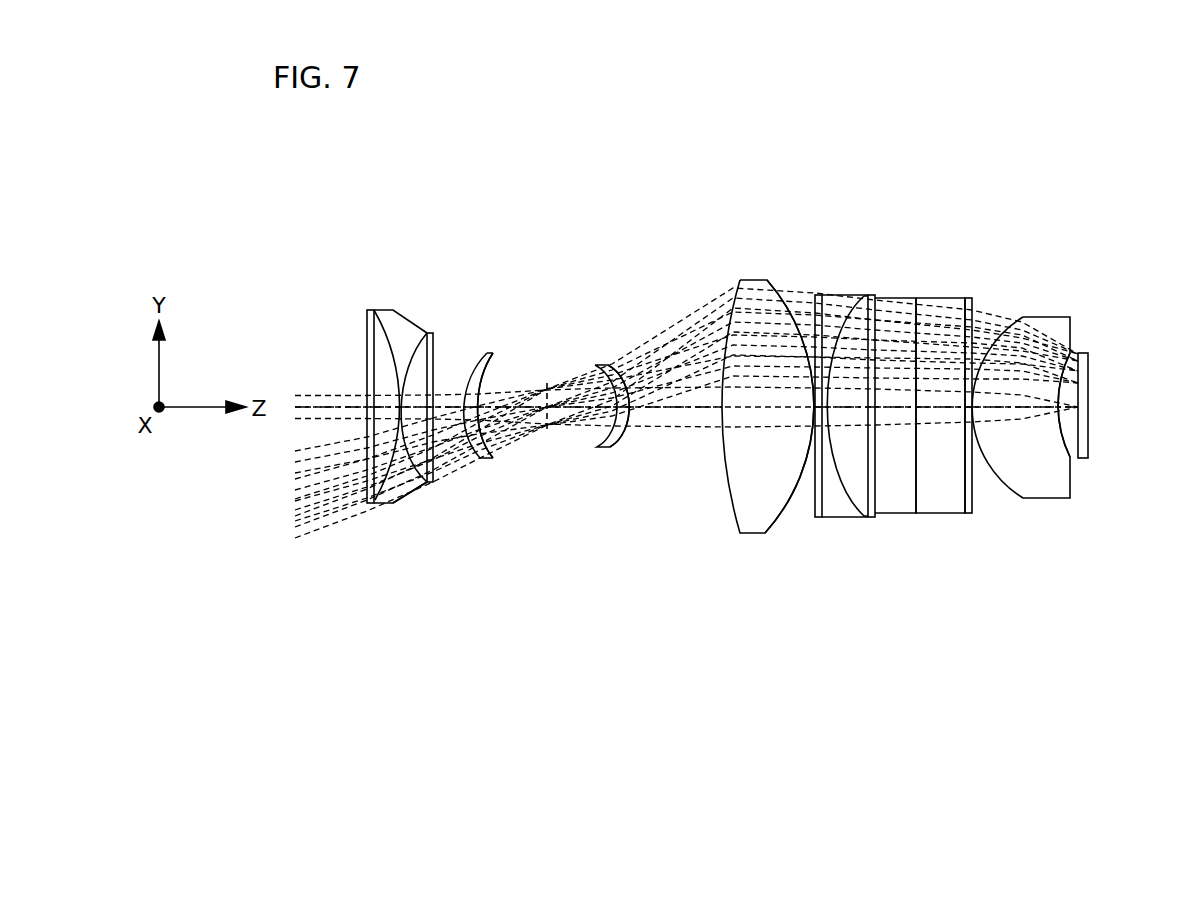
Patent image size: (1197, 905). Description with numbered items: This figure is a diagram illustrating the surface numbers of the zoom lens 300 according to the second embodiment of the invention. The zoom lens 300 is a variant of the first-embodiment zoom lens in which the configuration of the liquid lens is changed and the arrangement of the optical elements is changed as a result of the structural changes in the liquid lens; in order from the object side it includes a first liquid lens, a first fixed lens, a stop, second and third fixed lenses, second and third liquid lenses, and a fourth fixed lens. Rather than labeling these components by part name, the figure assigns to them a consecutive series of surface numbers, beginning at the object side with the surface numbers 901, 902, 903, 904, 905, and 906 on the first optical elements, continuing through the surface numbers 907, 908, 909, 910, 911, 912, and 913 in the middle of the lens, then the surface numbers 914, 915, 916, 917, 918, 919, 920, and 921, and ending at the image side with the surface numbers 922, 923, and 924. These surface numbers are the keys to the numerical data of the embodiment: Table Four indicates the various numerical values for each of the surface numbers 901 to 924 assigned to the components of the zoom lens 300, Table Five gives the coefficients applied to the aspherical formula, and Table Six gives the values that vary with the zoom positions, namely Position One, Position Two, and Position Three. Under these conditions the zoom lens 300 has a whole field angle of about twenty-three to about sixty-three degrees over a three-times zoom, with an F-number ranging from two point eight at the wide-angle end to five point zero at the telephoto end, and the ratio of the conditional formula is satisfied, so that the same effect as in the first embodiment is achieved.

The zoom lens 300 is at (945, 182).
The surface number 901 is at (365, 352).
The surface number 902 is at (365, 332).
The surface number 903 is at (385, 507).
The surface number 904 is at (416, 492).
The surface number 905 is at (428, 346).
The surface number 906 is at (433, 368).
The surface number 907 is at (480, 460).
The surface number 908 is at (495, 448).
The surface number 909 is at (548, 385).
The surface number 910 is at (599, 434).
The surface number 911 is at (622, 440).
The surface number 912 is at (737, 293).
The surface number 913 is at (772, 280).
The surface number 914 is at (813, 478).
The surface number 915 is at (828, 503).
The surface number 916 is at (858, 308).
The surface number 917 is at (868, 465).
The surface number 918 is at (877, 490).
The surface number 919 is at (915, 380).
The surface number 920 is at (963, 470).
The surface number 921 is at (973, 482).
The surface number 922 is at (1018, 317).
The surface number 923 is at (1058, 447).
The surface number 924 is at (1090, 437).